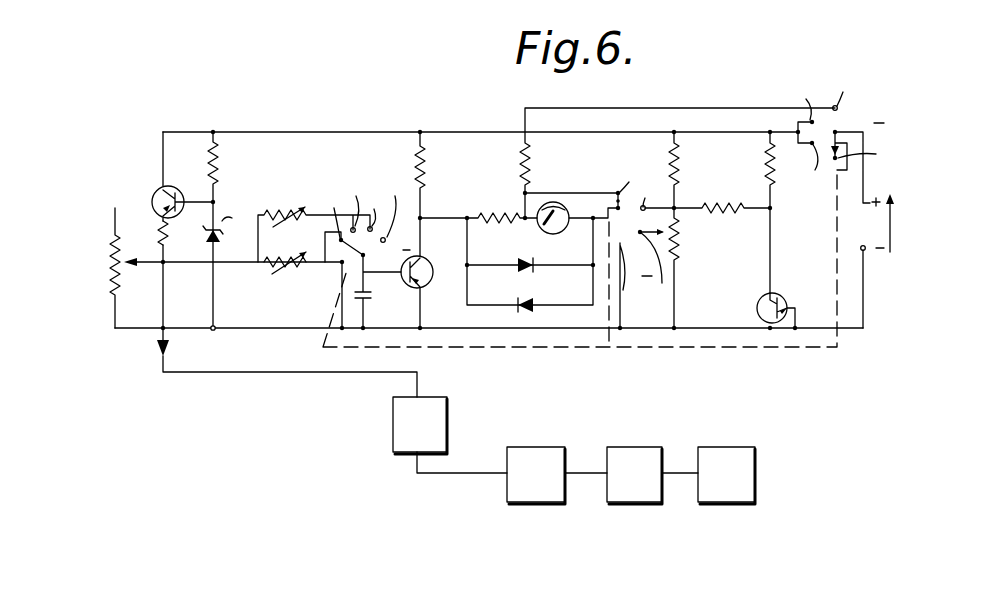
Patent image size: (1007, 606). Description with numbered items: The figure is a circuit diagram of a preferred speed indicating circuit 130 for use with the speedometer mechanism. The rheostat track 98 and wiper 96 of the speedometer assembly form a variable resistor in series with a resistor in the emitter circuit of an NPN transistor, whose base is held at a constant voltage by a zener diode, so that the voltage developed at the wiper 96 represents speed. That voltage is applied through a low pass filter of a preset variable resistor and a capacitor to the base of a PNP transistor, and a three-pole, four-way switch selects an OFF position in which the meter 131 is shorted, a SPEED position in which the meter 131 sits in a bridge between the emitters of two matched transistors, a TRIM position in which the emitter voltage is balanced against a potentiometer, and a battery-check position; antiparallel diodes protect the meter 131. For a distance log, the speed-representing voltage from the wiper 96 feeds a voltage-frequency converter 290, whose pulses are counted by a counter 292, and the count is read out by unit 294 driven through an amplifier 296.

The control circuit 130 is at (439, 122).
The meter 131 is at (563, 210).
The wiper 96 is at (138, 265).
The rheostat track 98 is at (110, 280).
The voltage-frequency converter 290 is at (450, 435).
The counter 292 is at (557, 475).
The readout unit 294 is at (726, 475).
The amplifier 296 is at (652, 475).